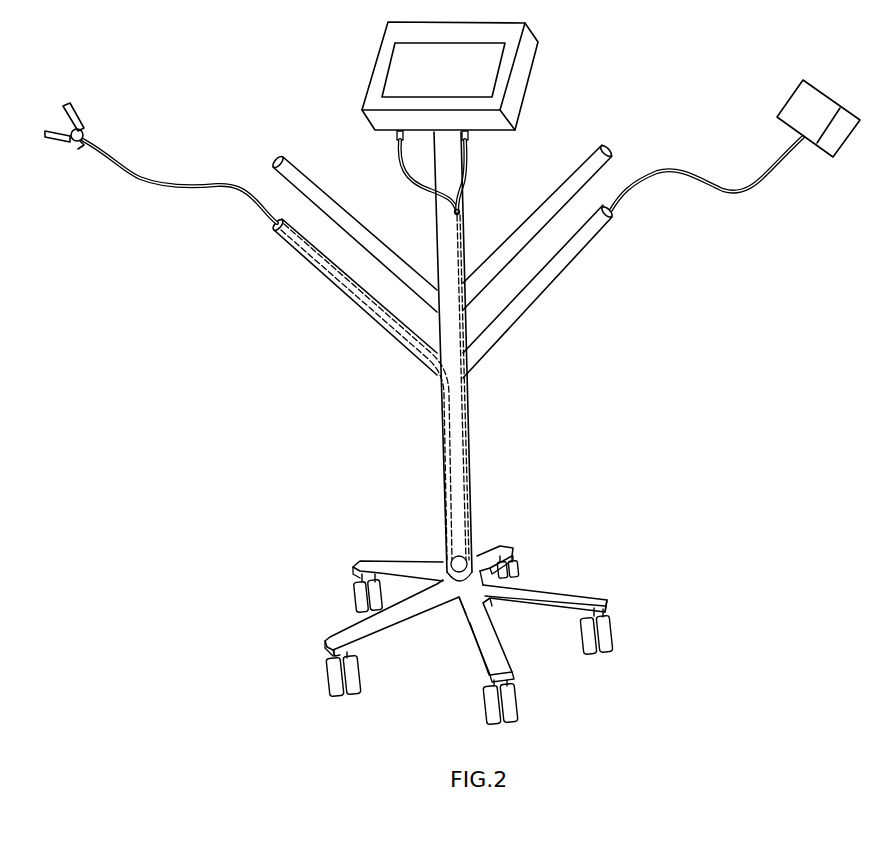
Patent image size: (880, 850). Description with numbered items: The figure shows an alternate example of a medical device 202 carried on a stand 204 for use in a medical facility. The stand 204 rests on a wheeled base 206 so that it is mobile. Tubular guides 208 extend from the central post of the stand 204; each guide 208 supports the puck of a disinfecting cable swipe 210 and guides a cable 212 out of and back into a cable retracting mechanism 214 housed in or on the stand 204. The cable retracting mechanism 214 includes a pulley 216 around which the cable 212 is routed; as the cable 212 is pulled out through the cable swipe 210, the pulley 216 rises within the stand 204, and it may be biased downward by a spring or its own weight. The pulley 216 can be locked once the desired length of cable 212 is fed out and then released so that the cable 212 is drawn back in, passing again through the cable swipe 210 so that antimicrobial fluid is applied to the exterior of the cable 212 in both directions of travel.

The medical device 202 is at (508, 33).
The stand 204 is at (472, 468).
The wheeled base 206 is at (573, 590).
The guide 208 is at (357, 304).
The cable swipe 210 is at (277, 227).
The cable 212 is at (143, 180).
The cable retracting mechanism 214 is at (443, 520).
The pulley 216 is at (470, 557).